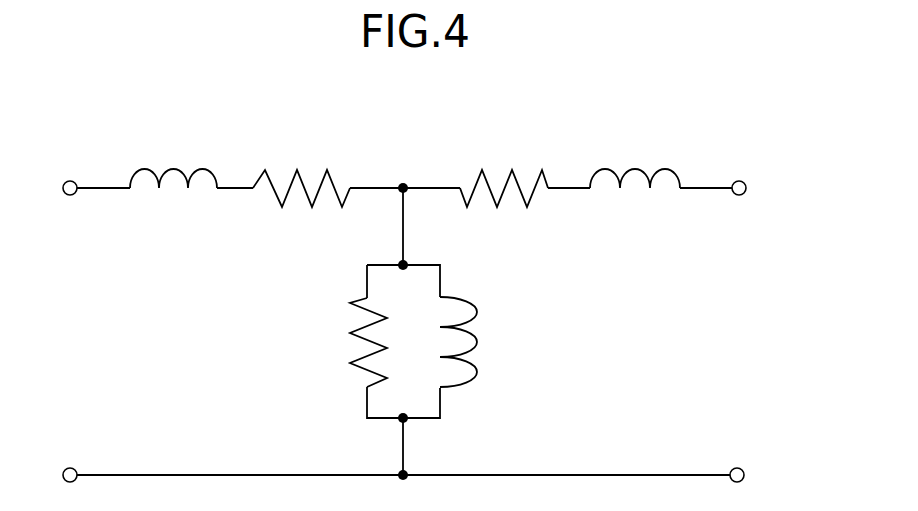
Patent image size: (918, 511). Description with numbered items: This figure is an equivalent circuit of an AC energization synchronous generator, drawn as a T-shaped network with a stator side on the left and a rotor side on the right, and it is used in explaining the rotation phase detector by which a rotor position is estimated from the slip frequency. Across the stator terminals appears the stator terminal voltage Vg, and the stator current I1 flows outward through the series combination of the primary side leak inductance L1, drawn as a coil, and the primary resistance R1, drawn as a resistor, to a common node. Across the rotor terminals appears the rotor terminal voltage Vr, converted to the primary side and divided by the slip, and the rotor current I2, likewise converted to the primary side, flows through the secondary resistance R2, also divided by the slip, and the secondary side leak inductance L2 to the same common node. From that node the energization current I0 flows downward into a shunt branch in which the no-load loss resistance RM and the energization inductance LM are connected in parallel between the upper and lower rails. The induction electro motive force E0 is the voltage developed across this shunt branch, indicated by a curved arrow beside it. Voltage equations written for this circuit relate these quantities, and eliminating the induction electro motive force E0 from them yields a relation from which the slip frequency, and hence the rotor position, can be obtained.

The primary side leak inductance L1 is at (173, 154).
The primary resistance R1 is at (301, 171).
The secondary resistance R2 is at (504, 171).
The secondary side leak inductance L2 is at (635, 154).
The no-load loss resistance RM is at (347, 342).
The energization inductance LM is at (487, 342).
The primary current I1 is at (125, 149).
The secondary current I2 is at (745, 151).
The energization current I0 is at (448, 202).
The induction electro motive force E0 is at (357, 226).
The stator terminal voltage Vg is at (63, 215).
The rotor terminal voltage Vr is at (745, 215).